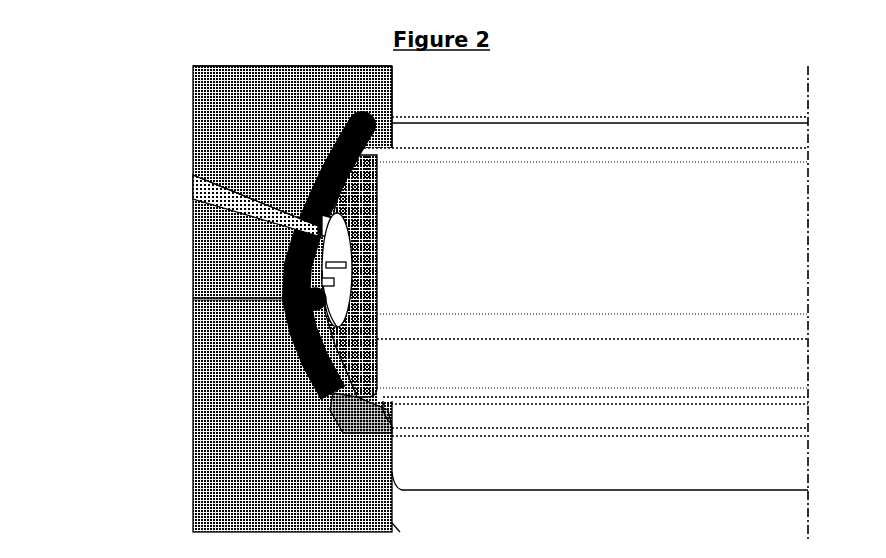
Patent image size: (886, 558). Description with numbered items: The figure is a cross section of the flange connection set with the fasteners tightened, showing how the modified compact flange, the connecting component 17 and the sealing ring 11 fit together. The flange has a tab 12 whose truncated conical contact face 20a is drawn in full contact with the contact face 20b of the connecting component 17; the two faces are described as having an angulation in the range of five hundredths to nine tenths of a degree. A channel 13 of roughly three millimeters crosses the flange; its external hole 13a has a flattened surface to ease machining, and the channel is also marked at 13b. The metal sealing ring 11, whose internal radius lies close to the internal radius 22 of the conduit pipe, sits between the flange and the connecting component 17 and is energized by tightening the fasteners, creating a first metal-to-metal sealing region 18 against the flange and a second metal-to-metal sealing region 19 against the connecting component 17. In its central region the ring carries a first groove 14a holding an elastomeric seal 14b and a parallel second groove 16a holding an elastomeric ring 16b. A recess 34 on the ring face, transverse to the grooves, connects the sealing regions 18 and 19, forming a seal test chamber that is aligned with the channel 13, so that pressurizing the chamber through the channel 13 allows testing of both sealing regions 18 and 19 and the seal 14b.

The sealing ring 11 is at (377, 241).
The tab 12 is at (193, 135).
The channel 13 is at (193, 204).
The external hole 13a is at (193, 186).
The bore end 13b is at (305, 232).
The groove 14a is at (332, 285).
The elastomeric seal 14b is at (325, 300).
The groove 16a is at (348, 225).
The elastomeric ring 16b is at (350, 243).
The connecting component 17 is at (193, 497).
The first metal-to-metal sealing region 18 is at (340, 197).
The second metal-to-metal sealing region 19 is at (330, 358).
The contact face 20a is at (240, 297).
The contact face 20b is at (240, 298).
The internal radius 22 is at (393, 470).
The recess 34 is at (342, 273).